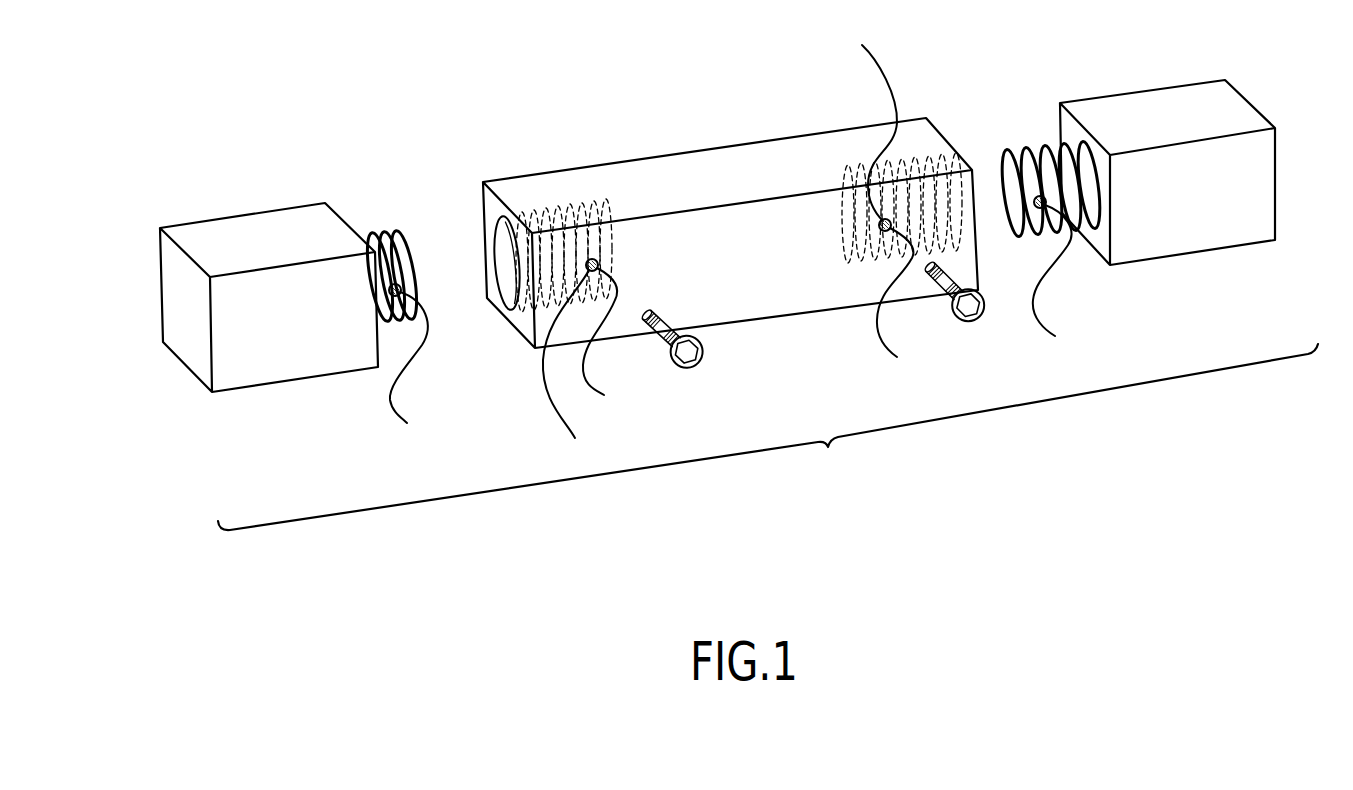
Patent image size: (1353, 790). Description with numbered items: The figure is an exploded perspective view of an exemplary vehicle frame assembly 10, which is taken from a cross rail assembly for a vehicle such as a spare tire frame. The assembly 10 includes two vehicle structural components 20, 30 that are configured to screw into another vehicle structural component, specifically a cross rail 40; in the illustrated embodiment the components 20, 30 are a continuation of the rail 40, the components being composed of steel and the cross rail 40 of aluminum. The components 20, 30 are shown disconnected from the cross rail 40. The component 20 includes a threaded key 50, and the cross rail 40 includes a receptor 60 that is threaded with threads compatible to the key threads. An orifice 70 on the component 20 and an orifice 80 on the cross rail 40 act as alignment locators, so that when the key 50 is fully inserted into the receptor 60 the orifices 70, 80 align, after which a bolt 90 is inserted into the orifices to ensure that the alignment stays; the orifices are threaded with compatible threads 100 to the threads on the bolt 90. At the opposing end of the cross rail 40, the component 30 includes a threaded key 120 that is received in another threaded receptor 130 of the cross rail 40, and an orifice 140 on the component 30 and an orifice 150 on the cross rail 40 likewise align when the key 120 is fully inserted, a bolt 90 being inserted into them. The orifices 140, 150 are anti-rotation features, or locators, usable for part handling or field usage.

The vehicle frame assembly 10 is at (768, 437).
The vehicle structural component 20 is at (222, 230).
The vehicle structural component 30 is at (1197, 92).
The cross rail 40 is at (722, 173).
The threaded key 50 is at (383, 230).
The receptor 60 is at (577, 205).
The orifice 70 is at (413, 362).
The orifice 80 is at (575, 355).
The bolt 90 is at (975, 308).
The threads 100 is at (763, 319).
The threaded key 120 is at (1050, 145).
The receptor 130 is at (917, 157).
The orifice 140 is at (1064, 273).
The orifice 150 is at (868, 125).